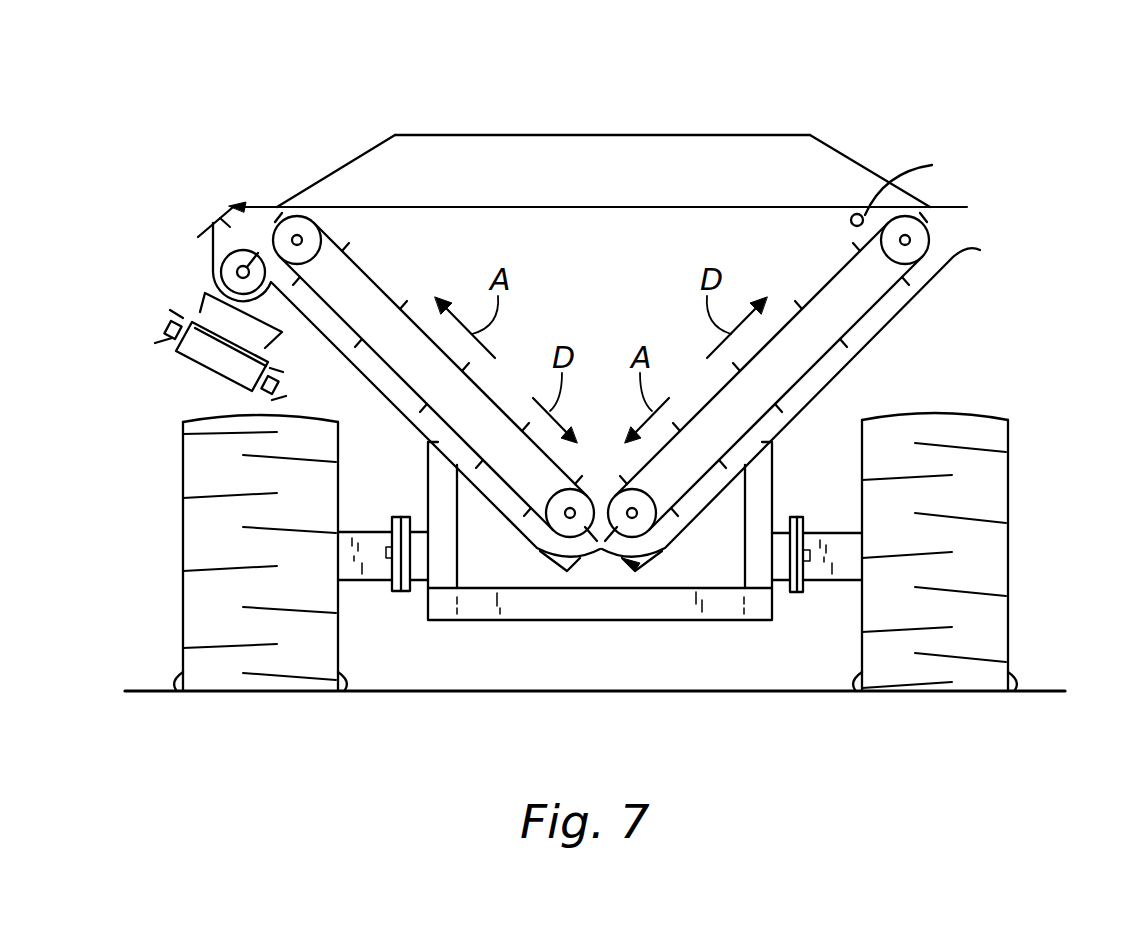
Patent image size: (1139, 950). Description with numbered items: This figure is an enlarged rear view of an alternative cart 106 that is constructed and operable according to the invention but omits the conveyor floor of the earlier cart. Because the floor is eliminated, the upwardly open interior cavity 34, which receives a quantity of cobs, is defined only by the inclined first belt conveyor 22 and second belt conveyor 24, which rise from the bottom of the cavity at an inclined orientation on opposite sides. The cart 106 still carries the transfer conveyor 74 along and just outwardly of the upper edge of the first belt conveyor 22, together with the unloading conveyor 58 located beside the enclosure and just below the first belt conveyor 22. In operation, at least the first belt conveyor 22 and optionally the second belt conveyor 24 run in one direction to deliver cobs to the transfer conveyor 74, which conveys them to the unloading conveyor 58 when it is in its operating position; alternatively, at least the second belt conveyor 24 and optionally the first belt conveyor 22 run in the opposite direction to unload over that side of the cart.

The alternative cart 106 is at (1026, 153).
The interior cavity 34 is at (626, 269).
The first belt conveyor 22 is at (368, 275).
The second belt conveyor 24 is at (806, 304).
The transfer conveyor 74 is at (221, 268).
The unloading conveyor 58 is at (183, 316).